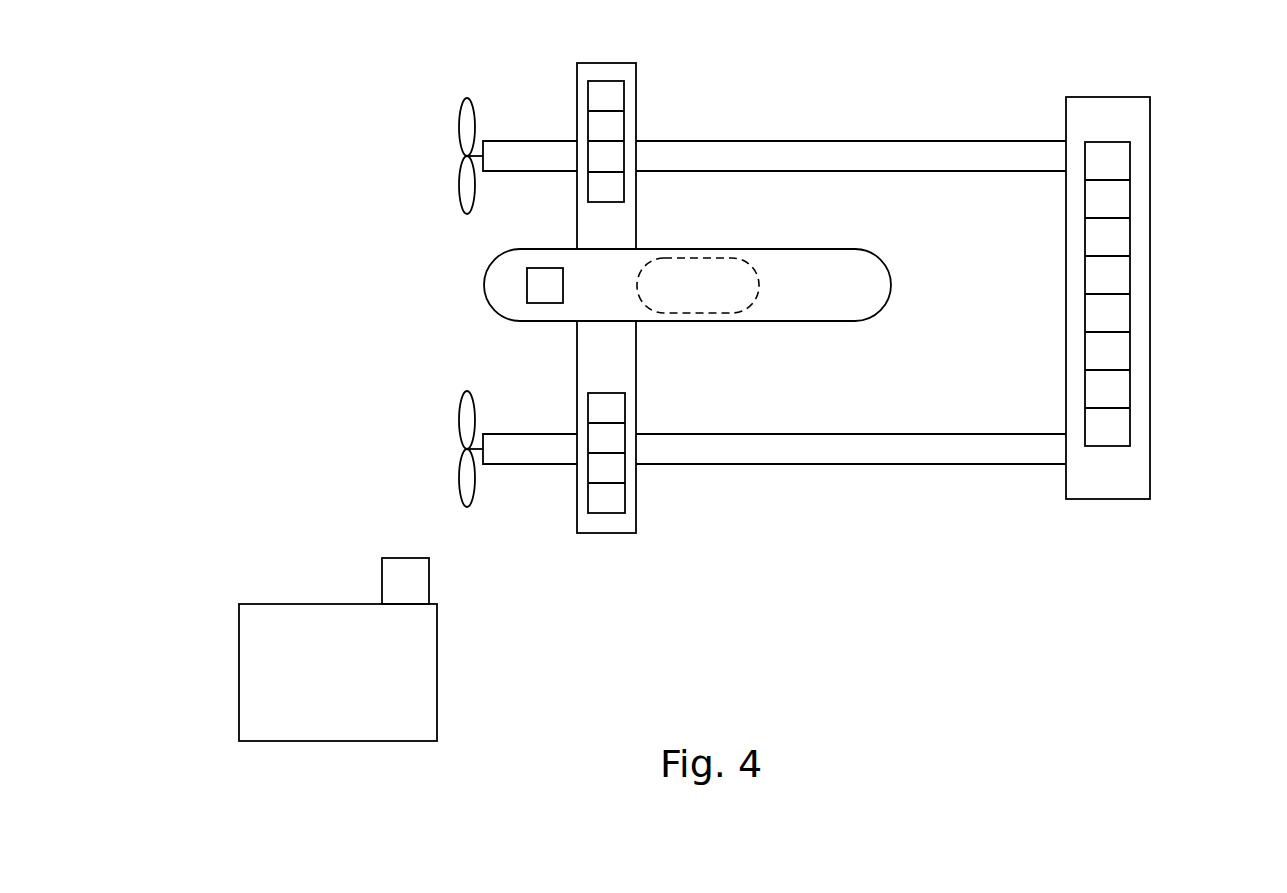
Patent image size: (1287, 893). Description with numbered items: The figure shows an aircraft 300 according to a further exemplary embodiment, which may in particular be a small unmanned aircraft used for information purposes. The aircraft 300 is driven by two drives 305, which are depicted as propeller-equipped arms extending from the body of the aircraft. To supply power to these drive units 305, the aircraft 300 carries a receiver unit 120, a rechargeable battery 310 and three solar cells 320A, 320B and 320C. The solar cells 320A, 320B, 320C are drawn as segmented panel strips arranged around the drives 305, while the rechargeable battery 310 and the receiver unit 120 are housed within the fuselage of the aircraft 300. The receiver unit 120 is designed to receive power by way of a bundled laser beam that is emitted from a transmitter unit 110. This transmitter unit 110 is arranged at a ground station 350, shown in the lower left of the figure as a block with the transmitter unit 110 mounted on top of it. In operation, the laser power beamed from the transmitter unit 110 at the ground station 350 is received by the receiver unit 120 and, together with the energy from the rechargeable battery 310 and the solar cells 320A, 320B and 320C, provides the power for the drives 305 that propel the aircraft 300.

The aircraft 300 is at (268, 163).
The drive 305 is at (537, 140).
The rechargeable battery 310 is at (527, 288).
The solar cell 320A is at (623, 98).
The solar cell 320B is at (624, 497).
The solar cell 320C is at (1130, 357).
The receiver unit 120 is at (753, 298).
The transmitter unit 110 is at (403, 558).
The ground station 350 is at (310, 604).